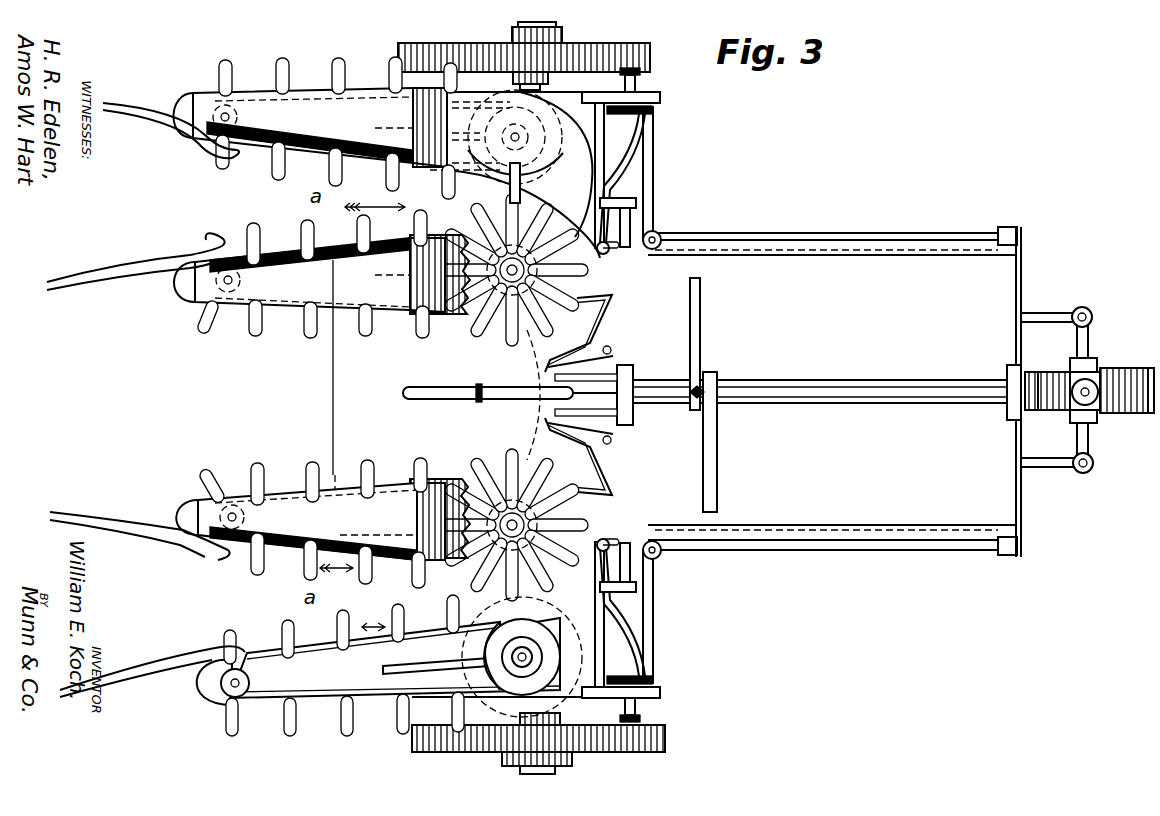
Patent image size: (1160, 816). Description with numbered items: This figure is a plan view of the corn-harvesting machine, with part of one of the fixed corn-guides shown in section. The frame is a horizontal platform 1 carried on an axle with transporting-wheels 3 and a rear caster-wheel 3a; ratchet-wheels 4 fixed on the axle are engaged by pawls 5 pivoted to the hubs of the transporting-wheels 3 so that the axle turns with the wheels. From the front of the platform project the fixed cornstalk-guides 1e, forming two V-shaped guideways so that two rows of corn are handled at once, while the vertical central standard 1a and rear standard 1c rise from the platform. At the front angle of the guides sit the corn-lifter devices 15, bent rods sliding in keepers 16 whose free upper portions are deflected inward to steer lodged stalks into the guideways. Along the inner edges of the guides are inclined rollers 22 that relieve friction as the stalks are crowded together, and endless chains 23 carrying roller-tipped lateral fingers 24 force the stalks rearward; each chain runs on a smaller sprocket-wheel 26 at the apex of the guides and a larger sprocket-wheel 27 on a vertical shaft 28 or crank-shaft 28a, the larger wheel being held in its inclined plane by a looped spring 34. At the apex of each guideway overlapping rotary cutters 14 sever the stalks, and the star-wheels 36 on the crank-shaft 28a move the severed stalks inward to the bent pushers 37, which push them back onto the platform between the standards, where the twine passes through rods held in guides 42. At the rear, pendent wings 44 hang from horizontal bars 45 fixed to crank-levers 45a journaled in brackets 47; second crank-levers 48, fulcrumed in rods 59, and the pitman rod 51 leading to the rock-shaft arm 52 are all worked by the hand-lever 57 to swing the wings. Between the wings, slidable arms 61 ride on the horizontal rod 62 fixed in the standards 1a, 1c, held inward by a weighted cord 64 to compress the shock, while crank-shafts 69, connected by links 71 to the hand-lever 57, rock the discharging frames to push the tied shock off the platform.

The horizontal platform 1 is at (736, 394).
The vertical central standard 1a is at (625, 366).
The rear standard 1c is at (1042, 378).
The cornstalk-guide 1e is at (366, 396).
The transporting-wheel 3 is at (600, 728).
The rear caster-wheel 3a is at (1120, 412).
The ratchet-wheel 4 is at (520, 30).
The pawl 5 is at (545, 27).
The rotary cutter 14 is at (490, 228).
The corn-lifter device 15 is at (165, 132).
The keeper 16 is at (523, 657).
The roller 22 is at (390, 570).
The endless traveling chain 23 is at (433, 664).
The lateral finger 24 is at (273, 167).
The smaller sprocket-wheel 26 is at (249, 683).
The larger sprocket-wheel 27 is at (548, 650).
The vertical shaft 28 is at (490, 668).
The crank-shaft 28a is at (468, 325).
The spring 34 is at (470, 650).
The star-wheel 36 is at (493, 336).
The pusher 37 is at (613, 313).
The guide 42 is at (610, 254).
The pendent wing 44 is at (840, 250).
The horizontal bar 45 is at (762, 241).
The crank-lever 45a is at (630, 168).
The bracket 47 is at (630, 210).
The second crank-lever 48 is at (640, 74).
The pitman rod 51 is at (608, 110).
The arm of rock-shaft 52 is at (608, 96).
The hand-lever 57 is at (508, 398).
The rod 59 is at (652, 104).
The slidable arm 61 is at (700, 333).
The horizontal rod 62 is at (822, 388).
The cord 64 is at (690, 395).
The crank-shaft 69 is at (887, 386).
The link 71 is at (580, 392).